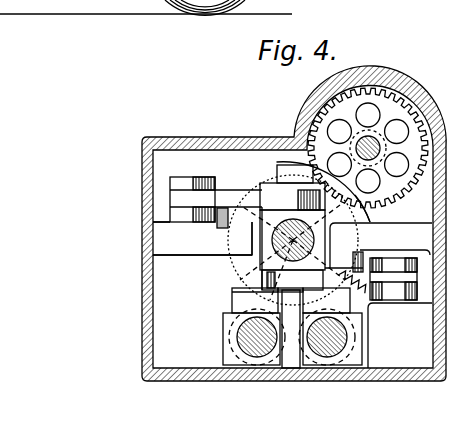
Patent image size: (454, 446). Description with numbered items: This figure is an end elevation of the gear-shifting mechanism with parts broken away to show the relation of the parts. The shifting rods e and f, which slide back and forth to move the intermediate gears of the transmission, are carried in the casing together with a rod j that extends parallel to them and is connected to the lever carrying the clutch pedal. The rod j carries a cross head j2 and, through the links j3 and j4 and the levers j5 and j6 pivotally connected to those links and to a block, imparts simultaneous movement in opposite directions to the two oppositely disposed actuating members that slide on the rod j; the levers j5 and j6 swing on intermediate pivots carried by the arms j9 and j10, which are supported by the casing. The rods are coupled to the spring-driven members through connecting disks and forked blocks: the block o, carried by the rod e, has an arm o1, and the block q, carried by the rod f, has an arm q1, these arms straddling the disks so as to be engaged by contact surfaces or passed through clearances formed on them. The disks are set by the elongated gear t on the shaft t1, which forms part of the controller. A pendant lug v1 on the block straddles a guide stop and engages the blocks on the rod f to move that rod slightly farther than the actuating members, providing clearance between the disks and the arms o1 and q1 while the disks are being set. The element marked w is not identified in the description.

The rod j is at (283, 237).
The cross head j2 is at (238, 232).
The link j3 is at (180, 177).
The link j4 is at (387, 263).
The lever j5 is at (214, 197).
The lever j6 is at (388, 280).
The arm j9 is at (173, 238).
The arm j10 is at (398, 236).
The elongated gear t is at (413, 143).
The shaft t1 is at (369, 147).
The forked block o is at (229, 333).
The arm o1 is at (241, 273).
The pendant lug v1 is at (290, 393).
The shifting rod e is at (263, 327).
The post w is at (288, 355).
The shifting rod f is at (347, 320).
The forked block q is at (345, 352).
The arm q1 is at (352, 284).